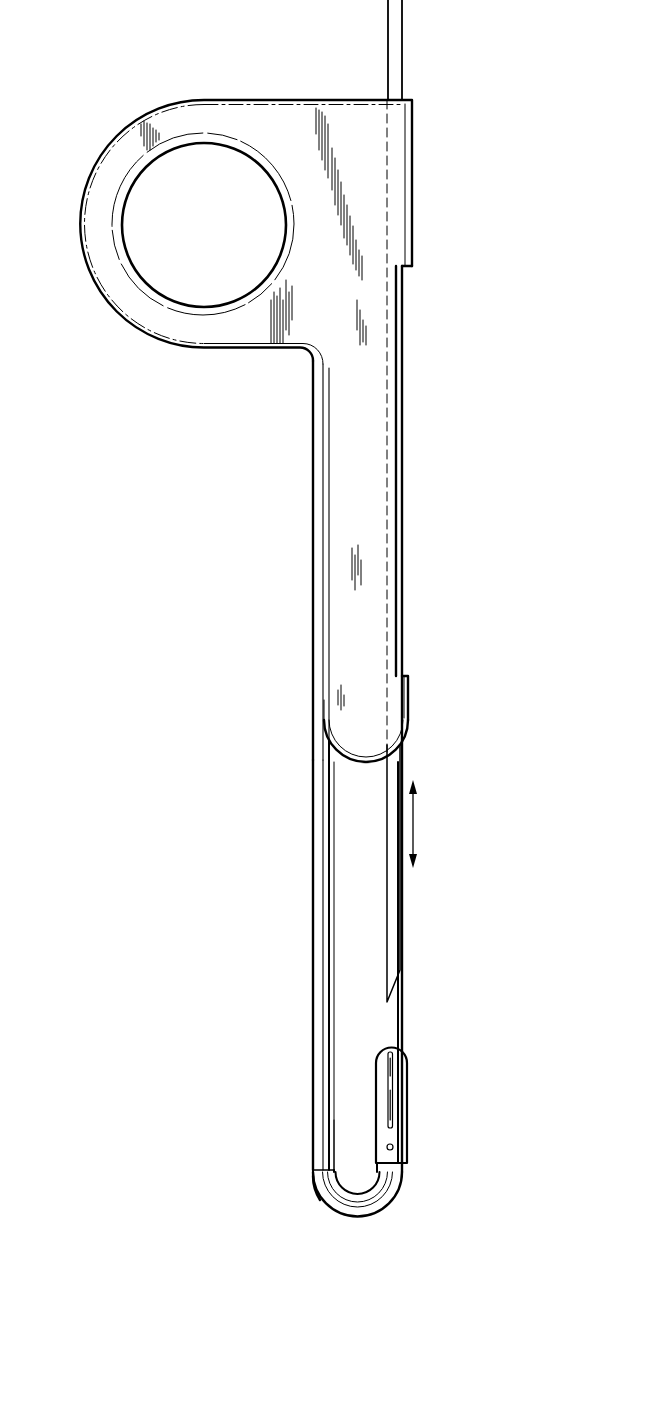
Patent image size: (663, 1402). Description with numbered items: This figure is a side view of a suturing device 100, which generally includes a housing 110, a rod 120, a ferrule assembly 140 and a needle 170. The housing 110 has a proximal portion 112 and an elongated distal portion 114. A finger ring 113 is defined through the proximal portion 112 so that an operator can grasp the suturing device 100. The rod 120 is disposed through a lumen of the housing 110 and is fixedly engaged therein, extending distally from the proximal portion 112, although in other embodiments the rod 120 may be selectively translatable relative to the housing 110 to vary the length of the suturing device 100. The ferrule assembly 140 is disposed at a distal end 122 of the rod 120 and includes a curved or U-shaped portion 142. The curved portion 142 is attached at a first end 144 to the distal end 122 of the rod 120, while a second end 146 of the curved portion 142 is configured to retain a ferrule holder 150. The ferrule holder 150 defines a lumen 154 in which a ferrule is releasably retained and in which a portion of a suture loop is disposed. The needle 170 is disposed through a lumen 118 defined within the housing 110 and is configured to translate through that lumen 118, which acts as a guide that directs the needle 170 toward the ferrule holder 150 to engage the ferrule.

The suturing device 100 is at (76, 80).
The housing 110 is at (207, 350).
The proximal portion 112 is at (82, 217).
The finger ring 113 is at (160, 268).
The elongated distal portion 114 is at (332, 552).
The lumen 118 is at (393, 192).
The rod 120 is at (312, 902).
The distal end 122 is at (310, 1157).
The ferrule assembly 140 is at (457, 1228).
The curved portion 142 is at (355, 1217).
The first end 144 is at (312, 1173).
The second end 146 is at (403, 1176).
The ferrule holder 150 is at (408, 1070).
The lumen 154 is at (394, 1034).
The needle 170 is at (400, 883).